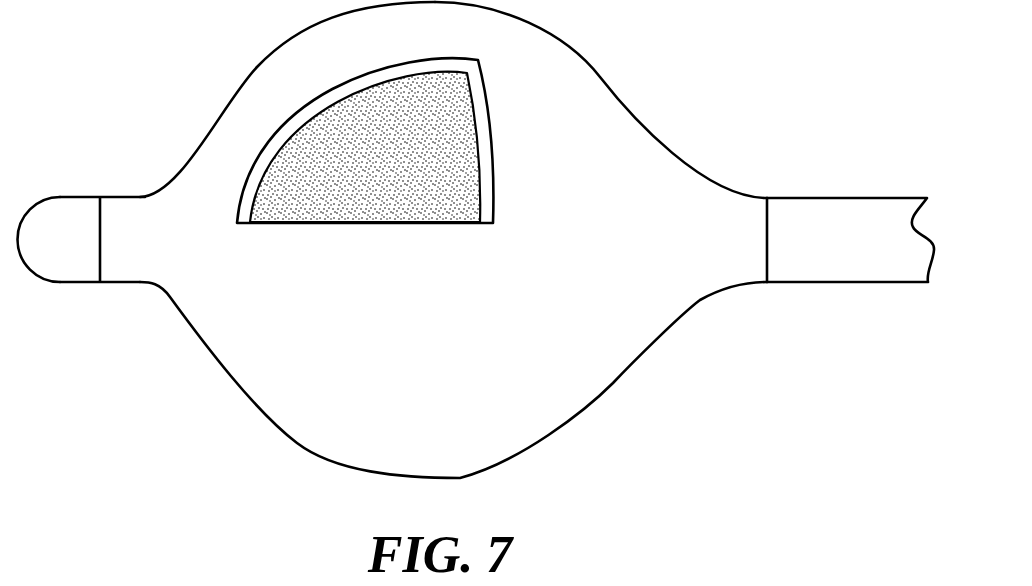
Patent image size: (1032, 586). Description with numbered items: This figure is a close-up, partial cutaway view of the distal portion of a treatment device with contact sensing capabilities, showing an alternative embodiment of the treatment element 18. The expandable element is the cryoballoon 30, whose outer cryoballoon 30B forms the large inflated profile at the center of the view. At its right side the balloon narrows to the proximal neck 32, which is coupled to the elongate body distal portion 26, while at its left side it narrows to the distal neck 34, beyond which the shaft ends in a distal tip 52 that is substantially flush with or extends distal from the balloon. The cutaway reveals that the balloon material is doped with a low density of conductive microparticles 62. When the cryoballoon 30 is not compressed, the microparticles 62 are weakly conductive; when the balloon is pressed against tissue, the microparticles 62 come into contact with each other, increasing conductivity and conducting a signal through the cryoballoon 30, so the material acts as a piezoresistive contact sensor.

The treatment element 18 is at (476, 240).
The elongate body distal portion 26 is at (878, 197).
The cryoballoon 30 is at (255, 66).
The outer cryoballoon 30B is at (602, 74).
The proximal neck 32 is at (733, 193).
The distal neck 34 is at (132, 196).
The distal tip 52 is at (49, 255).
The conductive microparticles 62 is at (407, 202).